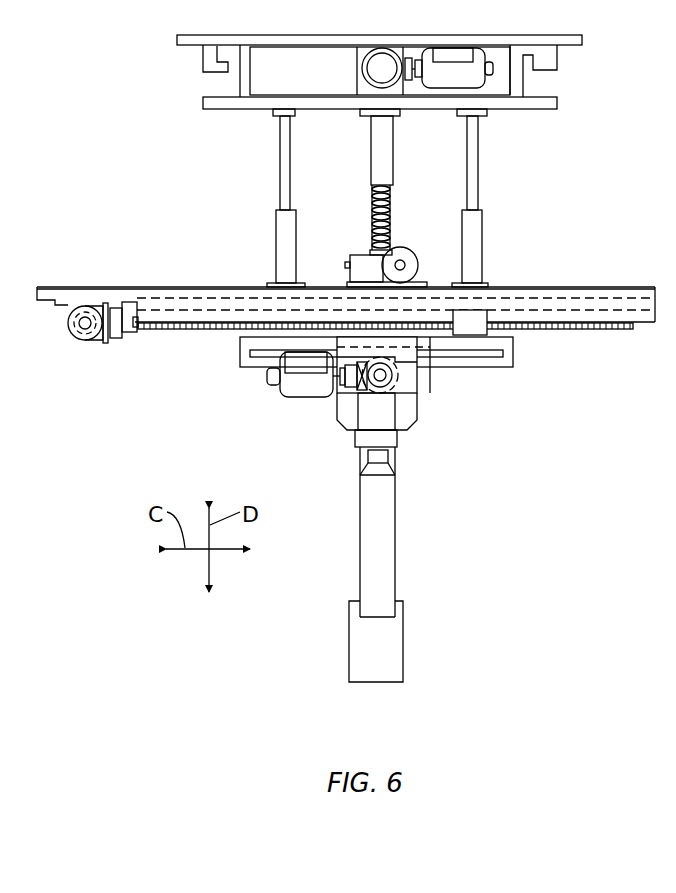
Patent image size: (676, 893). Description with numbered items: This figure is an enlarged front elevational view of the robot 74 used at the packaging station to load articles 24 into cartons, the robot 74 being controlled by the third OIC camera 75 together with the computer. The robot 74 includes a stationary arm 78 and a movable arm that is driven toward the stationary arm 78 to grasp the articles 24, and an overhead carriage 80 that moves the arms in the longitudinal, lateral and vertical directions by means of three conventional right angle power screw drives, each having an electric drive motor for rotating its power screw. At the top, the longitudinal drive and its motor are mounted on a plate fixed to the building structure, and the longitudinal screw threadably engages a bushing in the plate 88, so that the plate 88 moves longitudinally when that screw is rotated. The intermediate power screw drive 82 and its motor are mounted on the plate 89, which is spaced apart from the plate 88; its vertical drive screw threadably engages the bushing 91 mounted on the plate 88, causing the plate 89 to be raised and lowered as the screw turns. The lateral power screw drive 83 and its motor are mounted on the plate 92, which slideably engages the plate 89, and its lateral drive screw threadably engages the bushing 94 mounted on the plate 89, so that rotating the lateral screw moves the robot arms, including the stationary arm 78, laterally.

The articles 24 is at (403, 627).
The robot 74 is at (590, 329).
The third OIC camera 75 is at (387, 420).
The stationary arm 78 is at (395, 562).
The overhead carriage 80 is at (245, 110).
The intermediate power screw drive 82 is at (385, 228).
The lateral power screw drive 83 is at (193, 329).
The plate 88 is at (557, 110).
The plate 89 is at (169, 288).
The bushing 91 is at (372, 168).
The plate 92 is at (515, 363).
The bushing 94 is at (470, 319).